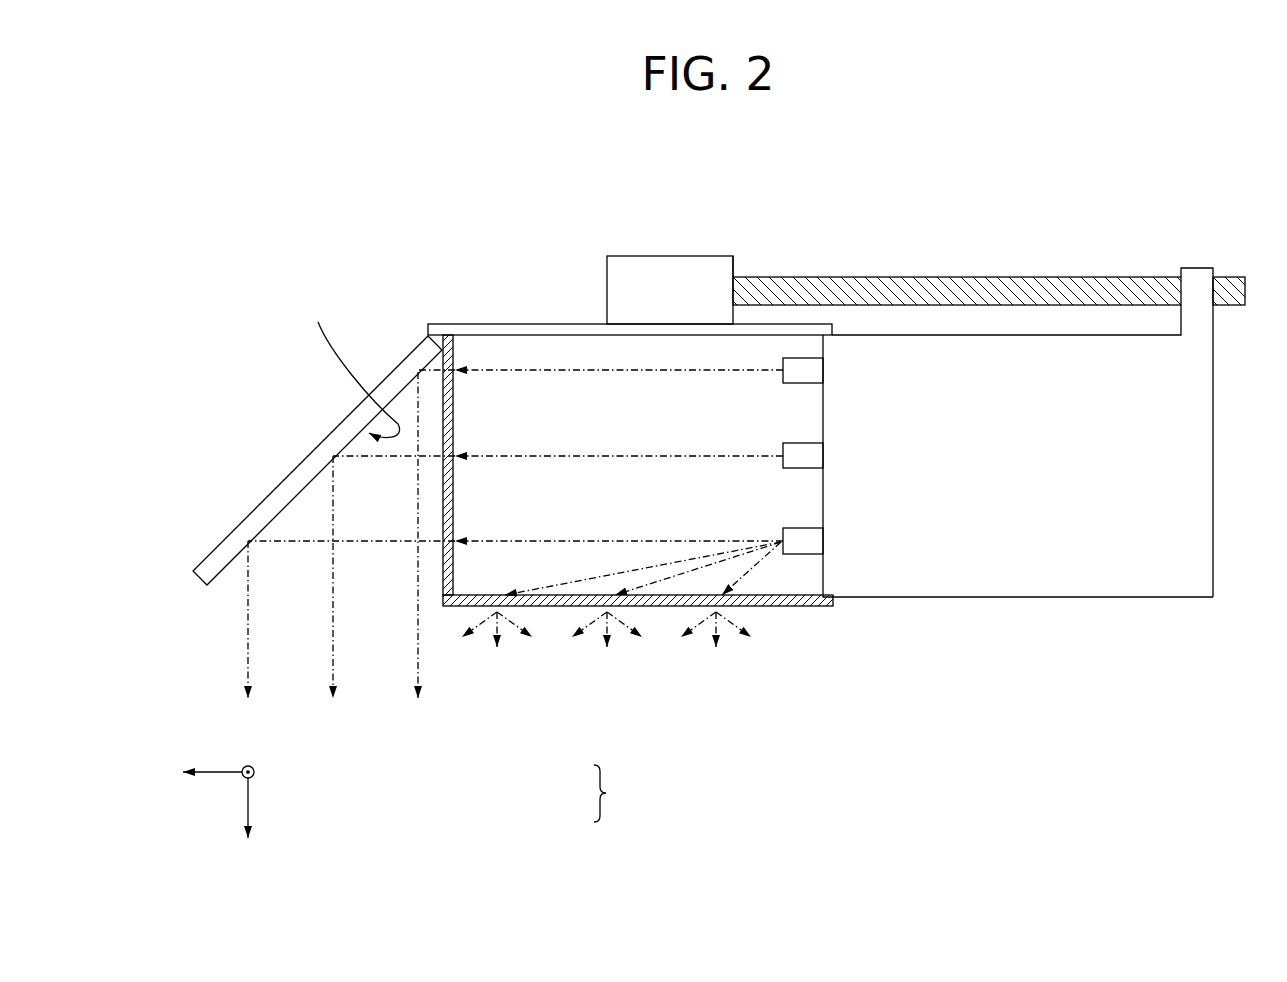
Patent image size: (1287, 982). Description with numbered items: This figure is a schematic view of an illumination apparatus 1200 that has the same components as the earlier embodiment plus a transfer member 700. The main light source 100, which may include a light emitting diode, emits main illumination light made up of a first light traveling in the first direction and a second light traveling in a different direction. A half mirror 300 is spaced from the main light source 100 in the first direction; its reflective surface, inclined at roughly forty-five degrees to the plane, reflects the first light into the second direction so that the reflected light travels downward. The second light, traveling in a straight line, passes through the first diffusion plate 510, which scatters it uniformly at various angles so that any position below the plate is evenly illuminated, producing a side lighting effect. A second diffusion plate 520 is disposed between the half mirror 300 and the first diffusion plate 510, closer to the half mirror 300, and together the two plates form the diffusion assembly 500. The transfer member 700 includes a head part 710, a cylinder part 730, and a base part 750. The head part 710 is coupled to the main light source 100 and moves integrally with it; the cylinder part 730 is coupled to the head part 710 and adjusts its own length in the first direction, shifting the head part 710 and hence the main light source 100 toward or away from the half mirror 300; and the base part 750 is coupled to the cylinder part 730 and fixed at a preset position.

The main light source 100 is at (818, 372).
The half mirror 300 is at (318, 458).
The light guide housing 500 is at (638, 415).
The first diffusion plate 510 is at (558, 595).
The second diffusion plate 520 is at (455, 436).
The transfer member 700 is at (984, 388).
The head part 710 is at (1003, 352).
The cylinder part 730 is at (953, 307).
The base part 750 is at (723, 273).
The illumination apparatus 1200 is at (699, 525).